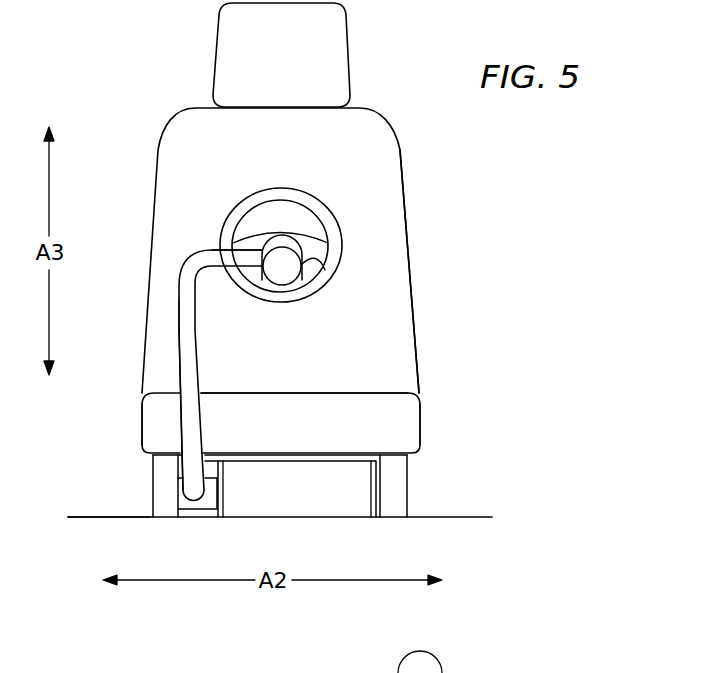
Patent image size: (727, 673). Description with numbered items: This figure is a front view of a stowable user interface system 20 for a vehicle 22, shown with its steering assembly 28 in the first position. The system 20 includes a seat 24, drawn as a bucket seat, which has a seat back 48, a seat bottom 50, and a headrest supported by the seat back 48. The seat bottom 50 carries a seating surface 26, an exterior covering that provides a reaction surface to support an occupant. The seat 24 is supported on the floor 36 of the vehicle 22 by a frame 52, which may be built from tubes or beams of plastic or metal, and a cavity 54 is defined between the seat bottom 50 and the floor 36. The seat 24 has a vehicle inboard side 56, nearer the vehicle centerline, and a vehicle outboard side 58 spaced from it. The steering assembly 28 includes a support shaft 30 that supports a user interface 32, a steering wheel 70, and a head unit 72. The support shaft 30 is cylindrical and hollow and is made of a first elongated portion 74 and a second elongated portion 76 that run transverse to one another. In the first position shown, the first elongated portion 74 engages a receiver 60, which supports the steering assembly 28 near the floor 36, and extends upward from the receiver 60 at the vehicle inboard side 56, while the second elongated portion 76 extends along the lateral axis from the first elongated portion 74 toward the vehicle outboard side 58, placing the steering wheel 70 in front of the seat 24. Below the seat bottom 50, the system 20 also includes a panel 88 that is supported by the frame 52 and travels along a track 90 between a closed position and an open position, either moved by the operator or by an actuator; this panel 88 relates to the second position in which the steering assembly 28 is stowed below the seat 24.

The stowable user interface system 20 is at (224, 361).
The vehicle 22 is at (428, 517).
The seat 24 is at (405, 300).
The seating surface 26 is at (325, 392).
The steering assembly 28 is at (185, 338).
The support shaft 30 is at (177, 373).
The user interface 32 is at (250, 200).
The floor 36 is at (95, 516).
The seat back 48 is at (400, 225).
The seat bottom 50 is at (408, 408).
The frame 52 is at (163, 499).
The cavity 54 is at (331, 497).
The vehicle inboard side 56 is at (142, 418).
The vehicle outboard side 58 is at (420, 433).
The receiver 60 is at (198, 509).
The steering wheel 70 is at (310, 193).
The head unit 72 is at (285, 268).
The first elongated portion 74 is at (185, 307).
The second elongated portion 76 is at (217, 257).
The panel 88 is at (282, 507).
The track 90 is at (177, 473).